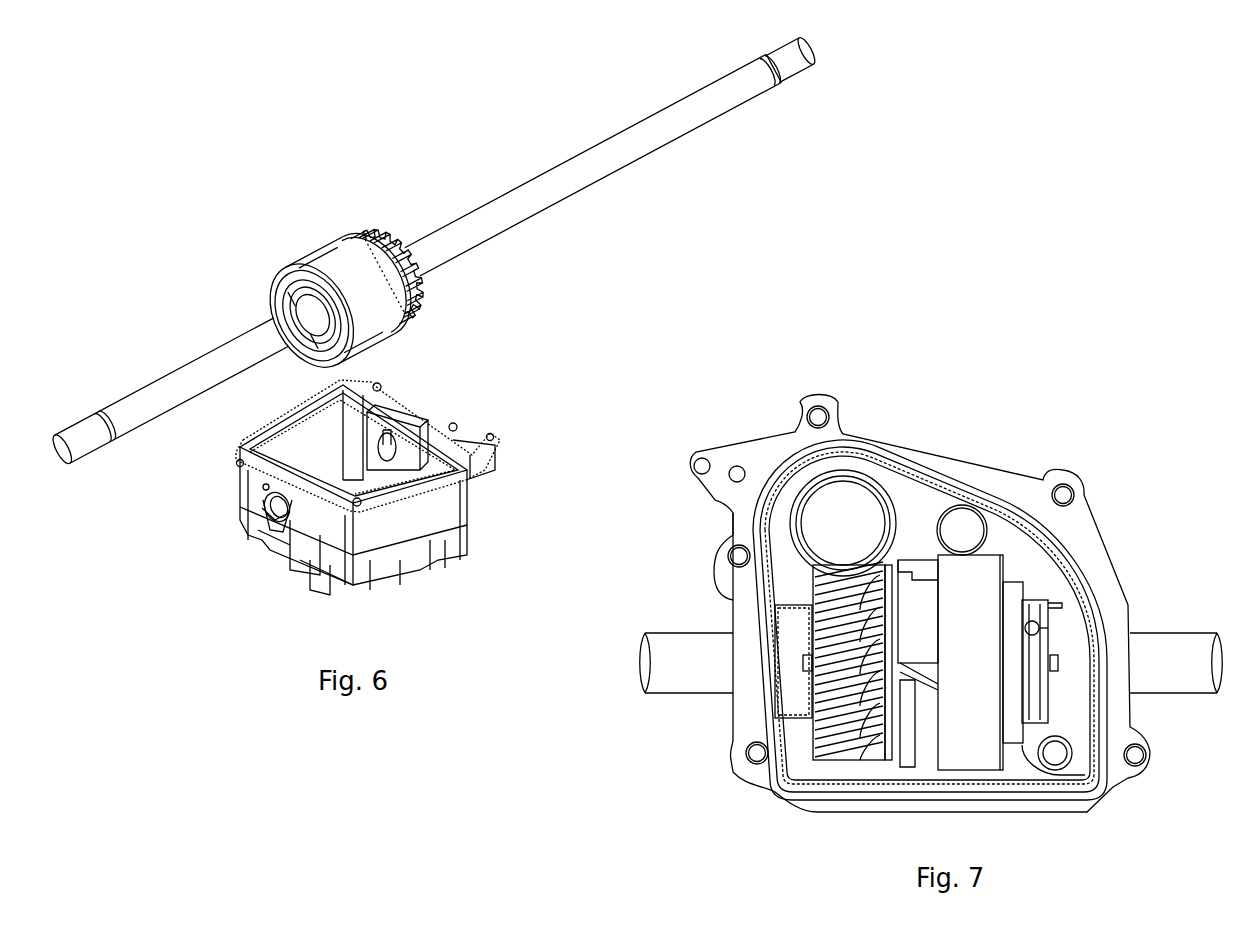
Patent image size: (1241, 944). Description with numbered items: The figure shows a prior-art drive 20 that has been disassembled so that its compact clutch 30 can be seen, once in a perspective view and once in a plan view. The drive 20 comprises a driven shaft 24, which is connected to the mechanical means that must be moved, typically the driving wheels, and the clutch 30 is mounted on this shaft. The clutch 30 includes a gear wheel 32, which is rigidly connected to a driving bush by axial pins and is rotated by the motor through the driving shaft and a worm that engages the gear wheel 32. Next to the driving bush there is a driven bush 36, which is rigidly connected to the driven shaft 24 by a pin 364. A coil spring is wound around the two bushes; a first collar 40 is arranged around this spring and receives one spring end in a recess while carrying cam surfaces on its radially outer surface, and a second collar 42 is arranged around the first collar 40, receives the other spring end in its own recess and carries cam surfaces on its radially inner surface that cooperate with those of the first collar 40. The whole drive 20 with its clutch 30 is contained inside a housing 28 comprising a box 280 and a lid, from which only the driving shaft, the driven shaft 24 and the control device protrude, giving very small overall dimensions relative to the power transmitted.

In FIG. 6, the drive 20 is at (245, 190).
In FIG. 7, the drive 20 is at (878, 323).
In FIG. 6, the driven shaft 24 is at (642, 130).
In FIG. 7, the driven shaft 24 is at (683, 663).
In FIG. 6, the housing 28 is at (236, 490).
In FIG. 6, the box 280 is at (400, 527).
In FIG. 7, the box 280 is at (942, 456).
In FIG. 6, the clutch 30 is at (300, 254).
In FIG. 7, the clutch 30 is at (996, 553).
In FIG. 7, the gear wheel 32 is at (840, 707).
In FIG. 7, the driven bush 36 is at (1015, 728).
In FIG. 7, the first collar 40 is at (927, 743).
In FIG. 7, the second collar 42 is at (982, 757).
In FIG. 7, the pin 364 is at (1042, 627).